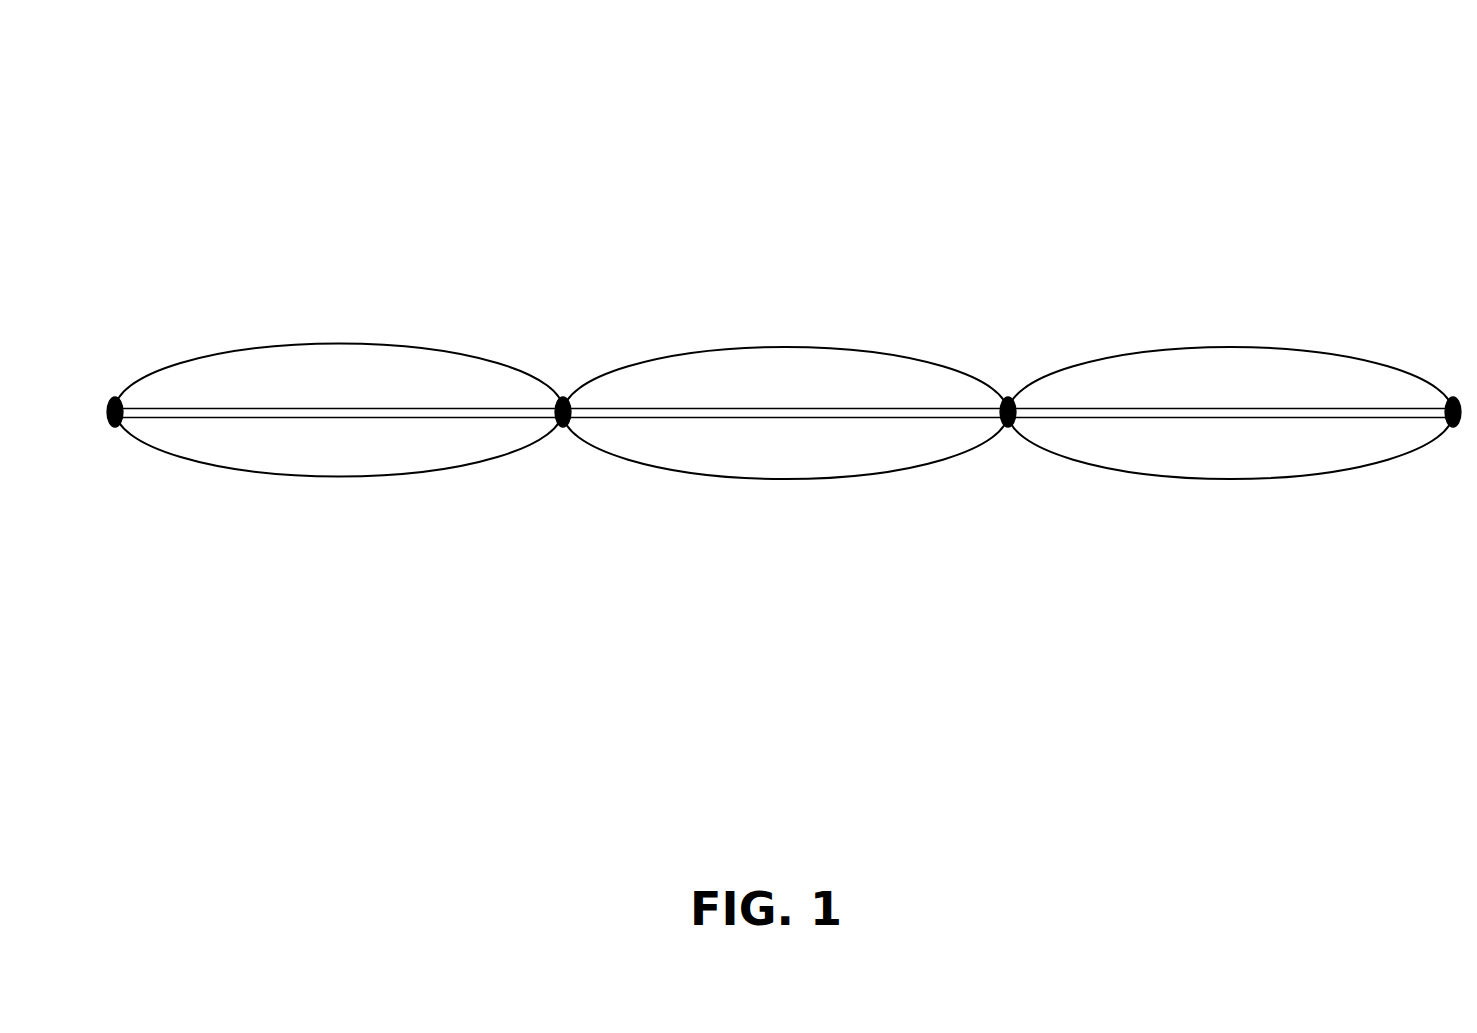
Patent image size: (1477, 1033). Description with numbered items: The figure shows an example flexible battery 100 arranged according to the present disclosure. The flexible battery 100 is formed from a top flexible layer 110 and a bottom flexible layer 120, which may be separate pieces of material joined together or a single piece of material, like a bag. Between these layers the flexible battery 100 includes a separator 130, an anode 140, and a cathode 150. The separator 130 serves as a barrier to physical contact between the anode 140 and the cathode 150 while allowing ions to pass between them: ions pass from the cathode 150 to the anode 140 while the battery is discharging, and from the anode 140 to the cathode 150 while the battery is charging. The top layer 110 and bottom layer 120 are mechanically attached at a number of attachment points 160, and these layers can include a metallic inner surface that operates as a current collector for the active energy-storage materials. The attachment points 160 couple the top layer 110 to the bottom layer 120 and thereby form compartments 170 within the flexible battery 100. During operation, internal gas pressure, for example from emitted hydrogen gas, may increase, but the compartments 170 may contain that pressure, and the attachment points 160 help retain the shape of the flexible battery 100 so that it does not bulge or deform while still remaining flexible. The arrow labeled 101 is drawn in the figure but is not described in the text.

The flexible battery 100 is at (263, 97).
The battery cell 101 is at (339, 393).
The top flexible layer 110 is at (304, 343).
The bottom flexible layer 120 is at (364, 476).
The separator 130 is at (494, 413).
The anode 140 is at (1008, 334).
The cathode 150 is at (1008, 496).
The attachment points 160 is at (1006, 405).
The compartments 170 is at (698, 512).